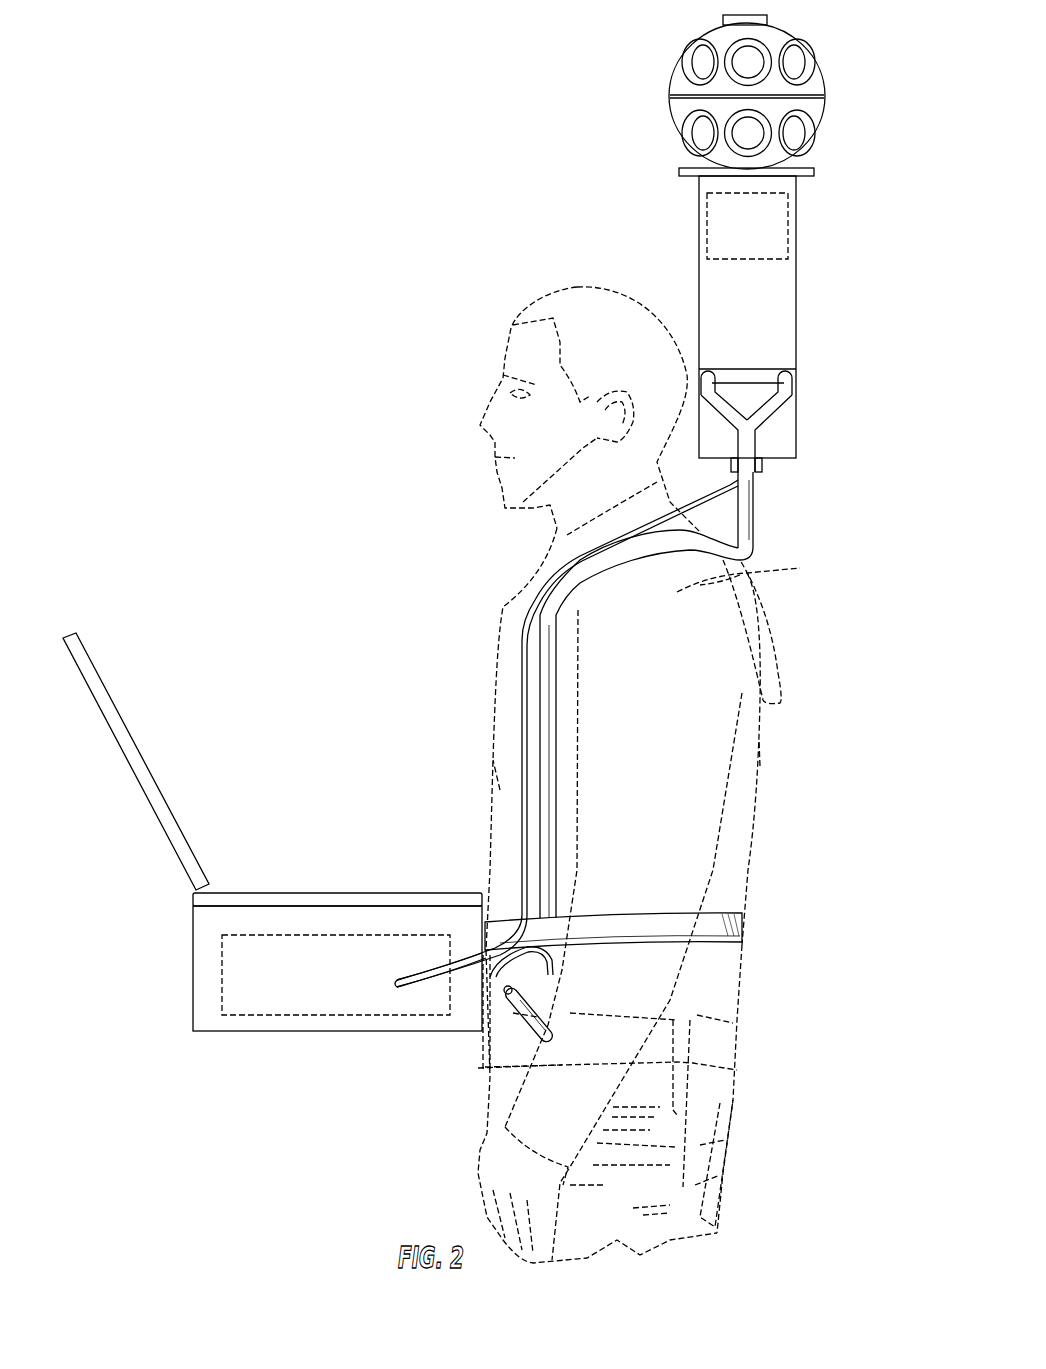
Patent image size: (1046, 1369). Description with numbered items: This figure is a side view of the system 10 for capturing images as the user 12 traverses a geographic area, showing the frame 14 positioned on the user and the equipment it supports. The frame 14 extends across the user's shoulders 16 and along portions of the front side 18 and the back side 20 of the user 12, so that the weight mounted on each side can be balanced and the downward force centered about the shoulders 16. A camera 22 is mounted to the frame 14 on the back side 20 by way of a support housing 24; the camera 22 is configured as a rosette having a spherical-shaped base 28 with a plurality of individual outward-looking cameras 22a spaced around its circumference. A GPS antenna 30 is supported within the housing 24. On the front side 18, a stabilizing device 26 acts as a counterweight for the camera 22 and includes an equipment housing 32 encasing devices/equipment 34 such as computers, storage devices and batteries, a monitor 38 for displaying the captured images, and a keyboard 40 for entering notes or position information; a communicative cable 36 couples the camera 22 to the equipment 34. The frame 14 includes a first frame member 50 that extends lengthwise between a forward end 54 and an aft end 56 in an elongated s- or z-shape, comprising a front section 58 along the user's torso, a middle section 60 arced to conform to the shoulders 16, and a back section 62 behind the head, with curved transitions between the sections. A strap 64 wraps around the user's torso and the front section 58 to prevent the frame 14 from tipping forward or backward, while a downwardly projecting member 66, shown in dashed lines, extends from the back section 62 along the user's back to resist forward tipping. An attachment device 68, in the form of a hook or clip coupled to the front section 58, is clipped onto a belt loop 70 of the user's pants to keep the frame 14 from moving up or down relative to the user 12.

The system 10 is at (152, 212).
The user 12 is at (575, 282).
The frame 14 is at (376, 654).
The shoulders 16 is at (740, 575).
The front side 18 is at (500, 790).
The back side 20 is at (760, 766).
The camera 22 is at (620, 76).
The individual cameras 22a is at (703, 42).
The support housing 24 is at (797, 282).
The stabilizing device 26 is at (128, 889).
The spherical-shaped base 28 is at (826, 95).
The GPS antenna 30 is at (788, 205).
The equipment housing 32 is at (193, 976).
The devices/equipment 34 is at (310, 1015).
The communicative cable 36 is at (410, 989).
The monitor 38 is at (110, 735).
The keyboard 40 is at (290, 893).
The first frame member 50 is at (549, 611).
The forward end 54 is at (488, 1003).
The aft end 56 is at (791, 382).
The front section 58 is at (548, 808).
The middle section 60 is at (650, 540).
The back section 62 is at (753, 497).
The strap 64 is at (742, 930).
The downwardly projecting member 66 is at (778, 626).
The attachment device 68 is at (530, 1010).
The belt loop 70 is at (478, 1070).